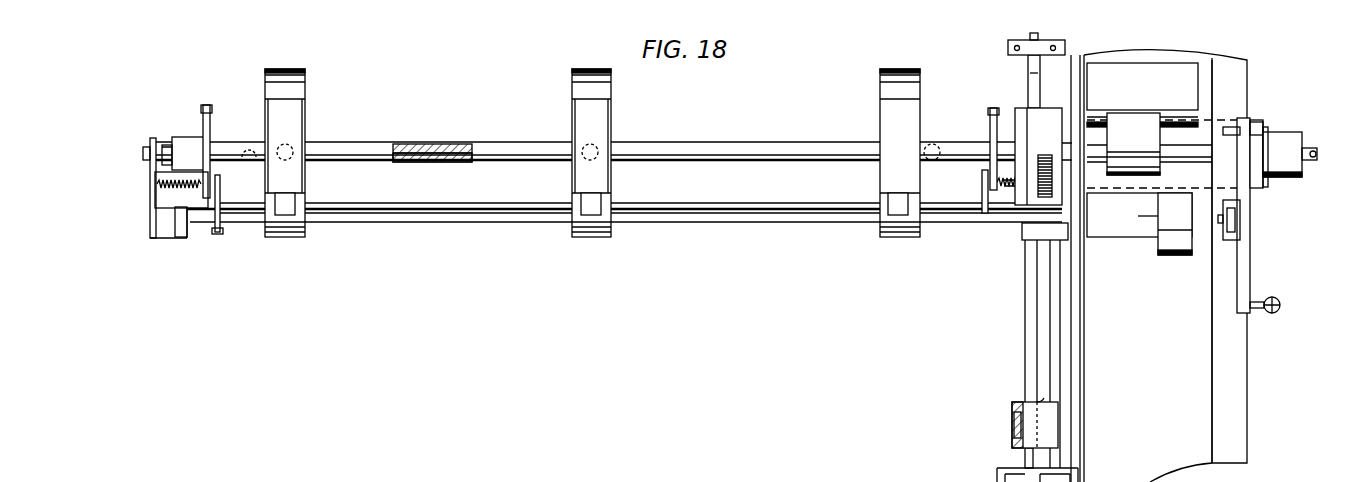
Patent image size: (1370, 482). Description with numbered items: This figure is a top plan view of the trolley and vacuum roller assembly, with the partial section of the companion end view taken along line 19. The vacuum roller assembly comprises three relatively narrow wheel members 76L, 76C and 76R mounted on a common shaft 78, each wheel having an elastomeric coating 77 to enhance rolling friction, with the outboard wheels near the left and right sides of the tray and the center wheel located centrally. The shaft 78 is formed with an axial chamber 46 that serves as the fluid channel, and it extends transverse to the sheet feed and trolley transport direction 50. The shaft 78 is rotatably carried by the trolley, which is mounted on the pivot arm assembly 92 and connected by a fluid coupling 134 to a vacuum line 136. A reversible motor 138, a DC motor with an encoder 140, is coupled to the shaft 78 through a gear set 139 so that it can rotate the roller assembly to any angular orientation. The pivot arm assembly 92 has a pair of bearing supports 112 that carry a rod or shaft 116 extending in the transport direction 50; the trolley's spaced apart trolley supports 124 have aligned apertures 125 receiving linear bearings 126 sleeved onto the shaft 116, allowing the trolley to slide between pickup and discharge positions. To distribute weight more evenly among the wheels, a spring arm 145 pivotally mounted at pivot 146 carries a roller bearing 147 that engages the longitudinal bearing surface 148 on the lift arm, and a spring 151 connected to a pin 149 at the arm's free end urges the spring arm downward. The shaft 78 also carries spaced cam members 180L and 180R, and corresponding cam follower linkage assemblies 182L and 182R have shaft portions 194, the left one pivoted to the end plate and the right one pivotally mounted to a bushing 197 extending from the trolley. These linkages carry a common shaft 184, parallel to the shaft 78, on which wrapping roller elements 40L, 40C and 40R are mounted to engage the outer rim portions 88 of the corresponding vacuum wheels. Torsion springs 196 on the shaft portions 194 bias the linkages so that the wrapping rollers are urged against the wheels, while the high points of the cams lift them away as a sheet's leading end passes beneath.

The section line 19 is at (110, 286).
The left wrapping roller element 40L is at (285, 216).
The center wrapping roller element 40C is at (600, 200).
The right wrapping roller element 40R is at (890, 200).
The axial chamber 46 is at (428, 164).
The transport direction 50 is at (588, 313).
The left wheel member 76L is at (300, 72).
The center wheel member 76C is at (587, 66).
The right wheel member 76R is at (908, 72).
The elastomeric coating 77 is at (303, 108).
The shaft 78 is at (440, 143).
The outer rim portion 88 is at (577, 185).
The pivot arm assembly 92 is at (1262, 366).
The bearing supports 112 is at (1010, 56).
The rod or shaft 116 is at (1025, 337).
The trolley supports 124 is at (1052, 414).
The apertures 125 is at (1014, 437).
The linear bearing 126 is at (1012, 412).
The fluid coupling 134 is at (1290, 175).
The vacuum line 136 is at (1305, 146).
The reversible motor 138 is at (1097, 232).
The gear set 139 is at (1022, 200).
The encoder 140 is at (1178, 256).
The spring arm 145 is at (1250, 268).
The pivot 146 is at (1265, 127).
The roller bearing 147 is at (1240, 206).
The bearing surface 148 is at (1212, 310).
The pin 149 is at (1272, 298).
The spring 151 is at (1280, 310).
The left cam member 180L is at (210, 112).
The right cam member 180R is at (990, 112).
The left cam follower linkage assembly 182L is at (193, 200).
The right cam follower linkage assembly 182R is at (976, 188).
The common shaft 184 is at (380, 205).
The shaft portion 194 is at (190, 160).
The torsion spring 196 is at (173, 192).
The bushing 197 is at (1027, 157).